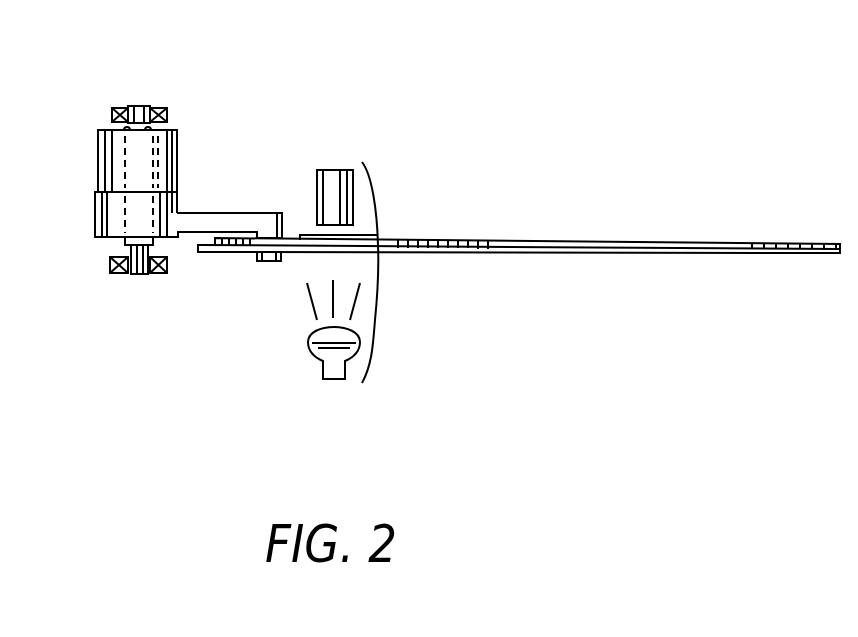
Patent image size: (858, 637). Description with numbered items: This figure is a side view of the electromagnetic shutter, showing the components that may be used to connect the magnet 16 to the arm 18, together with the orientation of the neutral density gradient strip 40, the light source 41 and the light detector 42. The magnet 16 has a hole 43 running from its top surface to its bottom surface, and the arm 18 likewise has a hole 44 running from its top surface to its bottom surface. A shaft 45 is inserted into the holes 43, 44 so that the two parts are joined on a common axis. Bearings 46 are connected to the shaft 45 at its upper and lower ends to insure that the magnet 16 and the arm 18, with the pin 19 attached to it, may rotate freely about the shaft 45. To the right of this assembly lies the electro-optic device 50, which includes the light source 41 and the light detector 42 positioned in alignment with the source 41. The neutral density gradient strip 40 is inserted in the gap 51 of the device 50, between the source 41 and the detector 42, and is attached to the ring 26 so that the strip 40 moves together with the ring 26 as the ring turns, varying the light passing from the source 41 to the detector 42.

The magnet 16 is at (177, 127).
The arm 18 is at (202, 213).
The pin 19 is at (262, 263).
The ring 26 is at (613, 244).
The neutral density gradient strip 40 is at (301, 238).
The light source 41 is at (308, 341).
The light detector 42 is at (333, 170).
The hole 43 is at (142, 133).
The hole 44 is at (133, 240).
The shaft 45 is at (137, 106).
The bearings 46 is at (122, 108).
The electro-optic device 50 is at (380, 271).
The gap 51 is at (328, 267).